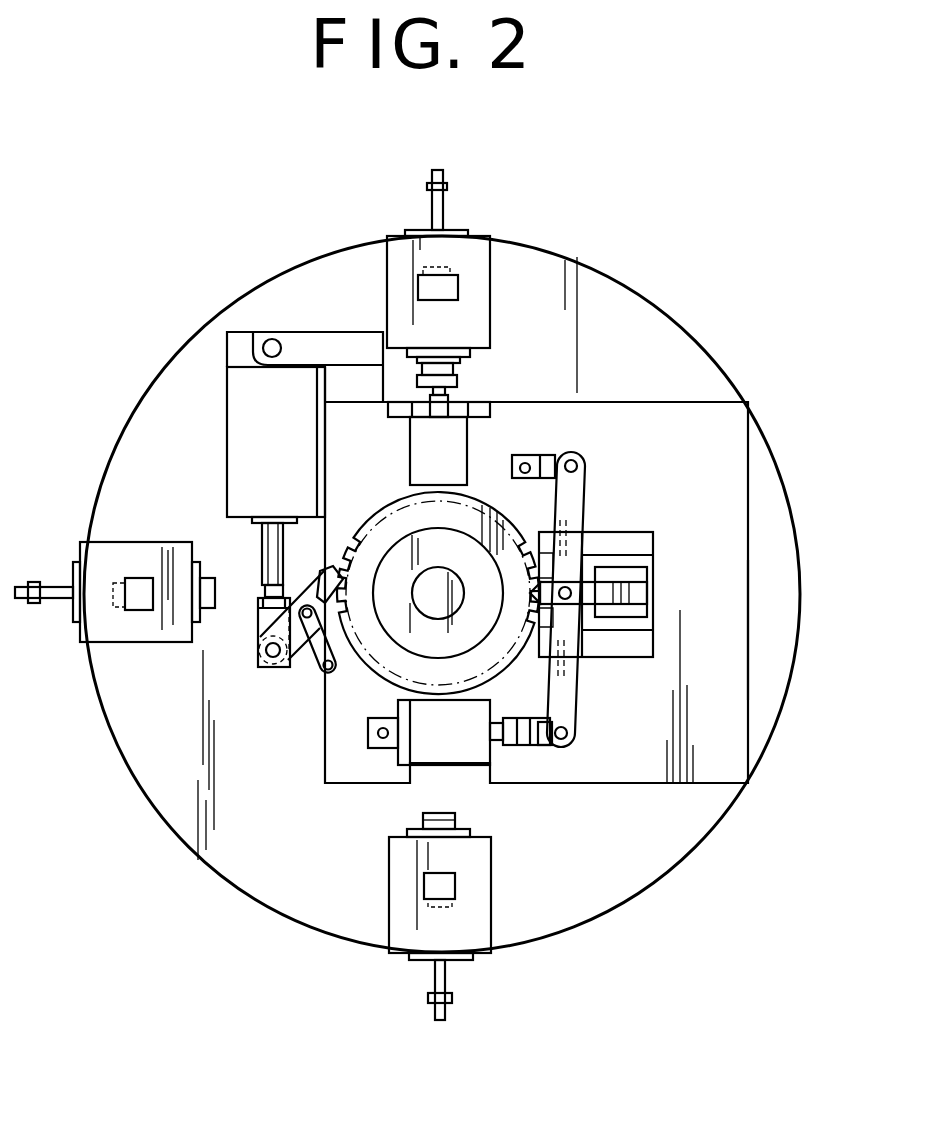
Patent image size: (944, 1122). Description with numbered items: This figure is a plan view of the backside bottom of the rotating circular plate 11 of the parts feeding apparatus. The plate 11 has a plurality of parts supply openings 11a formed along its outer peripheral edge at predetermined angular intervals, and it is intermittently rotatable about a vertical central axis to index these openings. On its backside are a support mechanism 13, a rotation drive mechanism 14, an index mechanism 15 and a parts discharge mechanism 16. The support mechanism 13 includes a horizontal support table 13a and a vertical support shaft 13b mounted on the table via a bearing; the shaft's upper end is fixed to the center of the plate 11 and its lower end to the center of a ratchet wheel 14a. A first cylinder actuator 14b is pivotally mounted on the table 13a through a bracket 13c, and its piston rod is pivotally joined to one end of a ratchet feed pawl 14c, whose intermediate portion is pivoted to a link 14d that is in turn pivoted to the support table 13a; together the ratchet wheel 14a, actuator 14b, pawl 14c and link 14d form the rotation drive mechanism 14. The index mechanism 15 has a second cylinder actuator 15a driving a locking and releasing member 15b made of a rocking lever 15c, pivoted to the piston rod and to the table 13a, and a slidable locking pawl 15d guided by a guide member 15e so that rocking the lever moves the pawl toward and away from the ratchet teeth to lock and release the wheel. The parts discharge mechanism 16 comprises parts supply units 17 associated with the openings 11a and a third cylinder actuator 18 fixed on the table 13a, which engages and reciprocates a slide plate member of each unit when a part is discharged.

The rotating circular plate 11 is at (675, 313).
The parts supply openings 11a is at (422, 283).
The support mechanism 13 is at (693, 402).
The support table 13a is at (725, 613).
The vertical support shaft 13b is at (428, 580).
The bracket 13c is at (337, 355).
The rotation drive mechanism 14 is at (258, 558).
The ratchet wheel 14a is at (380, 655).
The first cylinder actuator 14b is at (253, 410).
The ratchet feed pawl 14c is at (318, 598).
The link 14d is at (313, 652).
The index mechanism 15 is at (529, 638).
The second cylinder actuator 15a is at (465, 752).
The locking and releasing member 15b is at (545, 755).
The rocking lever 15c is at (578, 485).
The locking pawl 15d is at (555, 600).
The guide member 15e is at (621, 545).
The parts discharge mechanism 16 is at (494, 315).
The parts supply units 17 is at (493, 257).
The third cylinder actuator 18 is at (457, 443).